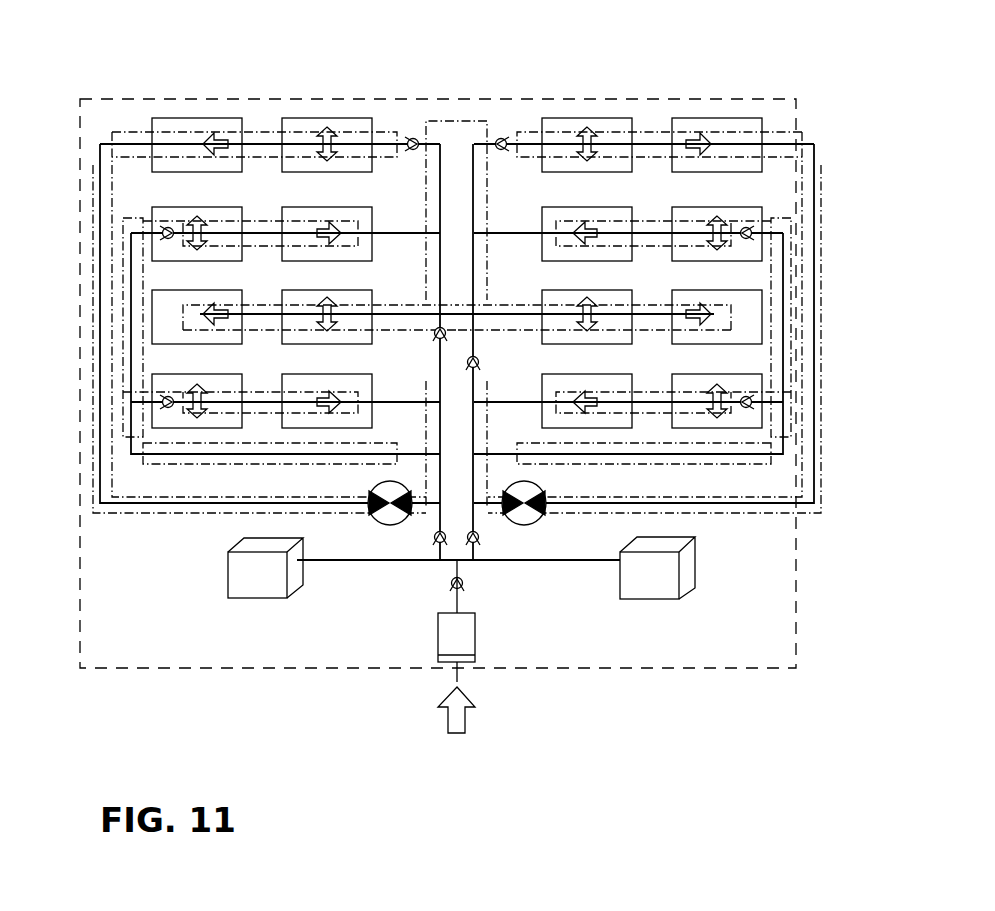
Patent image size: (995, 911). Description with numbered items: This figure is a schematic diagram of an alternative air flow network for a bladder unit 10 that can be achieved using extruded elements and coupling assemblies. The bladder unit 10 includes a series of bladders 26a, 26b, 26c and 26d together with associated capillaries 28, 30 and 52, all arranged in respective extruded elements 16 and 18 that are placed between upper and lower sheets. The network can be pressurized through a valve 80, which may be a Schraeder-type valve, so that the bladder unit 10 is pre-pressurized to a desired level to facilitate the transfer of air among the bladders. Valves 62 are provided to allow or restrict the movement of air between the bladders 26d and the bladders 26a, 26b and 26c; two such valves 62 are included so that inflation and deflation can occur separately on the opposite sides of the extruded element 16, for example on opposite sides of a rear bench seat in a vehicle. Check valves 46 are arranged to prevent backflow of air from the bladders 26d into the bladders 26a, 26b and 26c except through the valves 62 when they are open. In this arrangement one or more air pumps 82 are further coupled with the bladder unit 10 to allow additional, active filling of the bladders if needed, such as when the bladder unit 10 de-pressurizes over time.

The bladder unit 10 is at (112, 88).
The extruded element 16 is at (488, 262).
The extruded element 18 is at (261, 132).
The bladder 26a is at (208, 374).
The bladder 26b is at (208, 290).
The bladder 26c is at (232, 207).
The bladder 26d is at (180, 118).
The capillary 28 is at (471, 165).
The capillary 30 is at (273, 144).
The check valve 46 is at (412, 138).
The capillary 52 is at (440, 165).
The valve 62 is at (380, 523).
The valve 80 is at (448, 638).
The air pump 82 is at (257, 582).